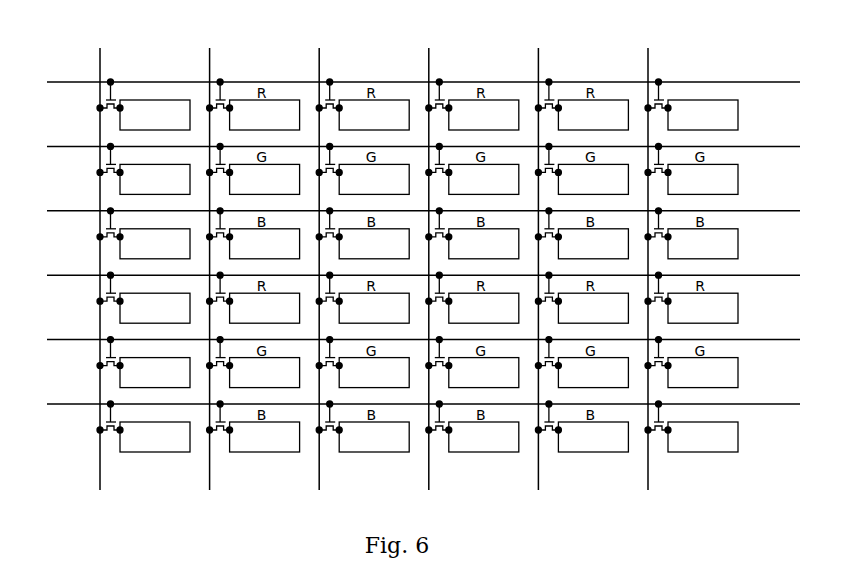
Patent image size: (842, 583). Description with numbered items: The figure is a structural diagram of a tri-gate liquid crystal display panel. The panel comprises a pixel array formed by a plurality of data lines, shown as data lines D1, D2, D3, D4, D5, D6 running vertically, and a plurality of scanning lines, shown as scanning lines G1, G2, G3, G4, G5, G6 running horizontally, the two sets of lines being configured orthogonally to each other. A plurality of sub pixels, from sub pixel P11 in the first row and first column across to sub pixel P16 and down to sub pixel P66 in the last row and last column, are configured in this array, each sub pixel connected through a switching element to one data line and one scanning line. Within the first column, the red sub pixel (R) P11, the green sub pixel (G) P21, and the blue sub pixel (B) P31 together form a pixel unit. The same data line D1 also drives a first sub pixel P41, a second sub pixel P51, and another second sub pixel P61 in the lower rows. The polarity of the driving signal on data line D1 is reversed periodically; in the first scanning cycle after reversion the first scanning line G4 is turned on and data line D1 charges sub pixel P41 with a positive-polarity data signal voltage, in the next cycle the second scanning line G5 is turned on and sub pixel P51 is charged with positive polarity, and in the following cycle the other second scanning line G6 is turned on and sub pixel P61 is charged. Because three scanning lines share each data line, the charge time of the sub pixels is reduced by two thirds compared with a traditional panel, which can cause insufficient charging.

The data line D1 is at (95, 256).
The data line D2 is at (203, 256).
The data line D3 is at (321, 258).
The data line D4 is at (433, 258).
The data line D5 is at (538, 258).
The data line D6 is at (646, 258).
The scanning line G1 is at (408, 82).
The scanning line G2 is at (408, 146).
The scanning line G3 is at (408, 211).
The first scanning line G4 is at (408, 275).
The second scanning line G5 is at (408, 340).
The another second scanning line G6 is at (408, 404).
The red sub pixel P11 is at (143, 104).
The sub pixel P16 is at (691, 104).
The green sub pixel P21 is at (143, 168).
The blue sub pixel P31 is at (143, 233).
The first sub pixel P41 is at (143, 297).
The second sub pixel P51 is at (143, 362).
The another second sub pixel P61 is at (143, 426).
The sub pixel P66 is at (691, 426).